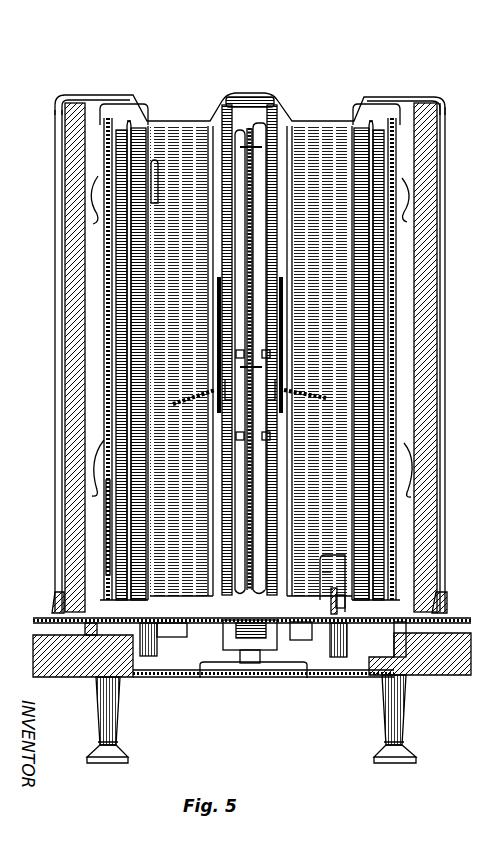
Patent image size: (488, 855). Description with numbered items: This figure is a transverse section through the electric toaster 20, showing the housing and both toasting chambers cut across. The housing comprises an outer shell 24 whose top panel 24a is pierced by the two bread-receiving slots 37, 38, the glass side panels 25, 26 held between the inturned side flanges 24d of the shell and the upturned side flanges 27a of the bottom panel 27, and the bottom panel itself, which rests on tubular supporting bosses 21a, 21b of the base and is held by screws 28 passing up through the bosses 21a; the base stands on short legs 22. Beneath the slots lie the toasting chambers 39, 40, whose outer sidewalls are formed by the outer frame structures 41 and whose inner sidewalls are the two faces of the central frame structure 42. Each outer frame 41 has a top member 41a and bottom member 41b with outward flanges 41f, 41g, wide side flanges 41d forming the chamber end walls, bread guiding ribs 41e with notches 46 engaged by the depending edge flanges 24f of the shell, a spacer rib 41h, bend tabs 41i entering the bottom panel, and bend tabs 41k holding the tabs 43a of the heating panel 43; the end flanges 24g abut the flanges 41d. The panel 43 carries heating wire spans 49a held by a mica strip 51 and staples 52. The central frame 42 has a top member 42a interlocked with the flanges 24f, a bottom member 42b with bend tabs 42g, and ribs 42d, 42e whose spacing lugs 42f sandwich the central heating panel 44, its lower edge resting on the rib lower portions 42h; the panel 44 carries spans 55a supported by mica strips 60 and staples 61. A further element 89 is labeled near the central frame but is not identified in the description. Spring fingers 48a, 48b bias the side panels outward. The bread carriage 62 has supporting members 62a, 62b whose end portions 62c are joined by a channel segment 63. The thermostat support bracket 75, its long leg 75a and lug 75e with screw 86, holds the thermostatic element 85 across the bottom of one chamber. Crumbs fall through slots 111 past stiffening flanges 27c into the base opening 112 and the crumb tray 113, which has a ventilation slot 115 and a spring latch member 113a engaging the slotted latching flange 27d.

The electric toaster 20 is at (60, 750).
The tubular supporting boss 21a is at (80, 672).
The tubular supporting boss 21b is at (93, 630).
The leg 22 is at (107, 764).
The outer shell 24 is at (352, 92).
The top panel 24a is at (237, 93).
The inturned side flange 24d is at (445, 110).
The edge flange 24f is at (136, 97).
The end flange 24g is at (163, 97).
The side panel 25 is at (428, 313).
The side panel 26 is at (65, 288).
The bottom panel 27 is at (83, 623).
The side flange 27a is at (65, 606).
The stiffening flange 27c is at (153, 653).
The slotted latching flange 27d is at (200, 664).
The screw 28 is at (110, 688).
The bread-receiving slot 37 is at (316, 100).
The bread-receiving slot 38 is at (178, 100).
The toasting chamber 39 is at (320, 309).
The toasting chamber 40 is at (173, 320).
The heating panel supporting frame structure 41 is at (355, 166).
The top member 41a is at (112, 104).
The bottom member 41b is at (404, 583).
The inwardly extending flange 41d is at (193, 126).
The bread guiding rib 41e is at (360, 188).
The top flange 41f is at (100, 100).
The bottom flange 41g is at (110, 600).
The spacer rib 41h is at (385, 208).
The bend tab 41i is at (173, 657).
The bend tab 41k is at (90, 95).
The central heating panel support frame structure 42 is at (217, 166).
The top member 42a is at (248, 99).
The bottom member 42b is at (261, 593).
The bread guiding rib 42d is at (273, 256).
The bread guiding rib 42e is at (227, 455).
The spacing lug 42f is at (272, 225).
The bend tab 42g is at (262, 657).
The lower portion 42h is at (227, 600).
The heating panel 43 is at (108, 362).
The tab 43a is at (116, 98).
The central heating panel 44 is at (247, 244).
The notch 46 is at (130, 126).
The spring finger 48a is at (417, 207).
The spring finger 48b is at (417, 463).
The heating wire span 49a is at (387, 548).
The mica strip 51 is at (384, 303).
The staple 52 is at (400, 120).
The heating wire span 55a is at (263, 430).
The mica strip 60 is at (258, 197).
The staple 61 is at (247, 147).
The bread carriage 62 is at (318, 400).
The bread supporting member 62a is at (315, 394).
The bread supporting member 62b is at (193, 394).
The end portion 62c is at (283, 323).
The channel segment 63 is at (284, 268).
The thermostat support bracket 75 is at (322, 650).
The long leg 75a is at (341, 603).
The lug 75e is at (327, 567).
The thermostatic element 85 is at (327, 577).
The screw 86 is at (344, 580).
The guide bar 89 is at (220, 192).
The slot 111 is at (180, 610).
The opening 112 is at (140, 680).
The crumb tray 113 is at (337, 625).
The spring latch member 113a is at (227, 647).
The ventilation slot 115 is at (243, 667).